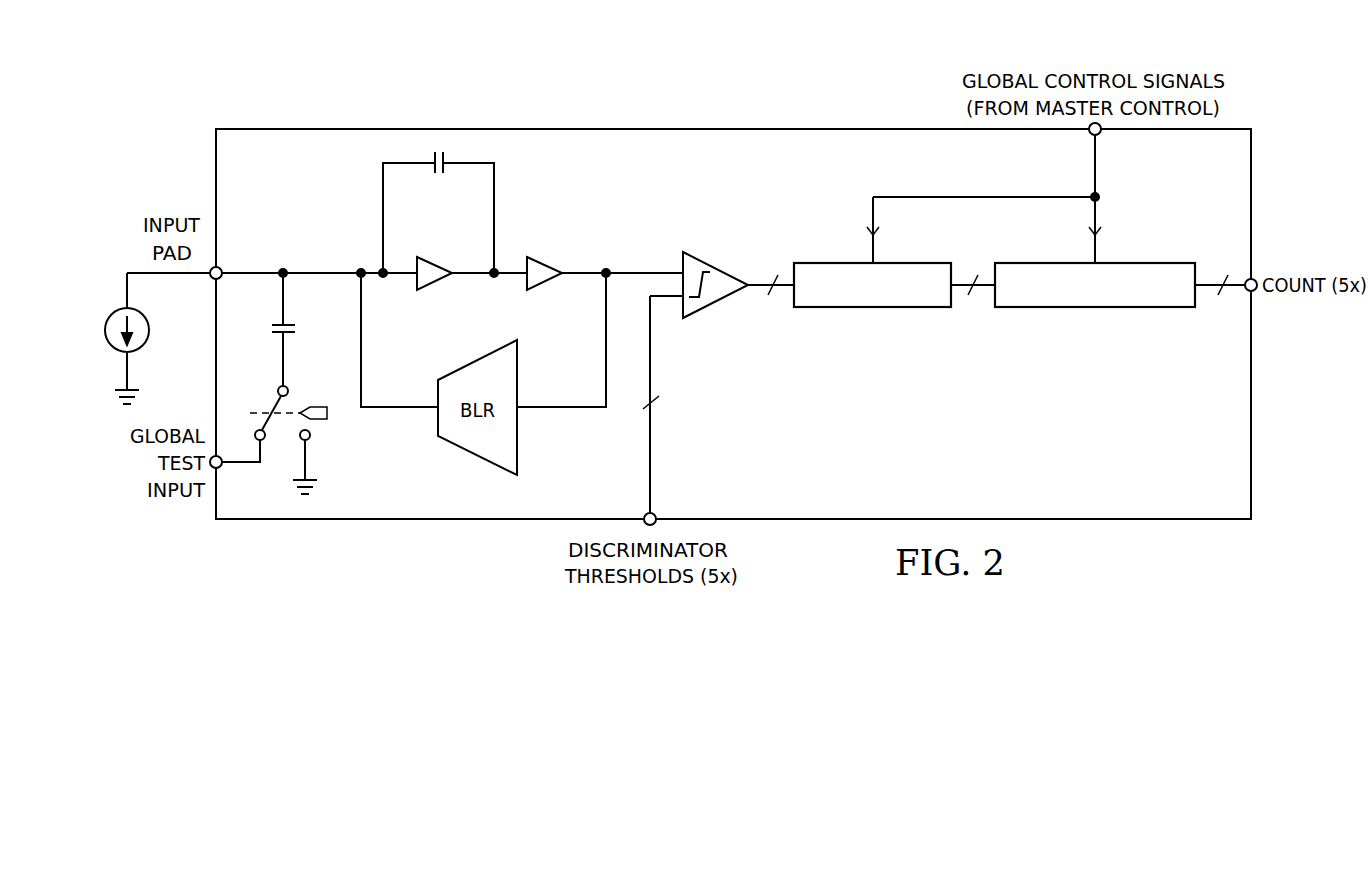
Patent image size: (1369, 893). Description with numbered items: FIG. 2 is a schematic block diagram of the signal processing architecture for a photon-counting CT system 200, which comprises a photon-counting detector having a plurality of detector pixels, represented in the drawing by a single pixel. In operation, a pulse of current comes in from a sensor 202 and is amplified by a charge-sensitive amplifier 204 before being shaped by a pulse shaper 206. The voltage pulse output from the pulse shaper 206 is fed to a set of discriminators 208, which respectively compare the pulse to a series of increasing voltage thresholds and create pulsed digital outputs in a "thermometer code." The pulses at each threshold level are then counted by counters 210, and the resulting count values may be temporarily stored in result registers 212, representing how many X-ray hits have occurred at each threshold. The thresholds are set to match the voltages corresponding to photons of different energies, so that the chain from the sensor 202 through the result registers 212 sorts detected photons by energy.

The photon-counting CT system 200 is at (562, 86).
The sensor 202 is at (109, 311).
The charge-sensitive amplifier 204 is at (457, 245).
The pulse shaper 206 is at (568, 245).
The discriminators 208 is at (718, 268).
The counters 210 is at (882, 307).
The result registers 212 is at (1105, 307).